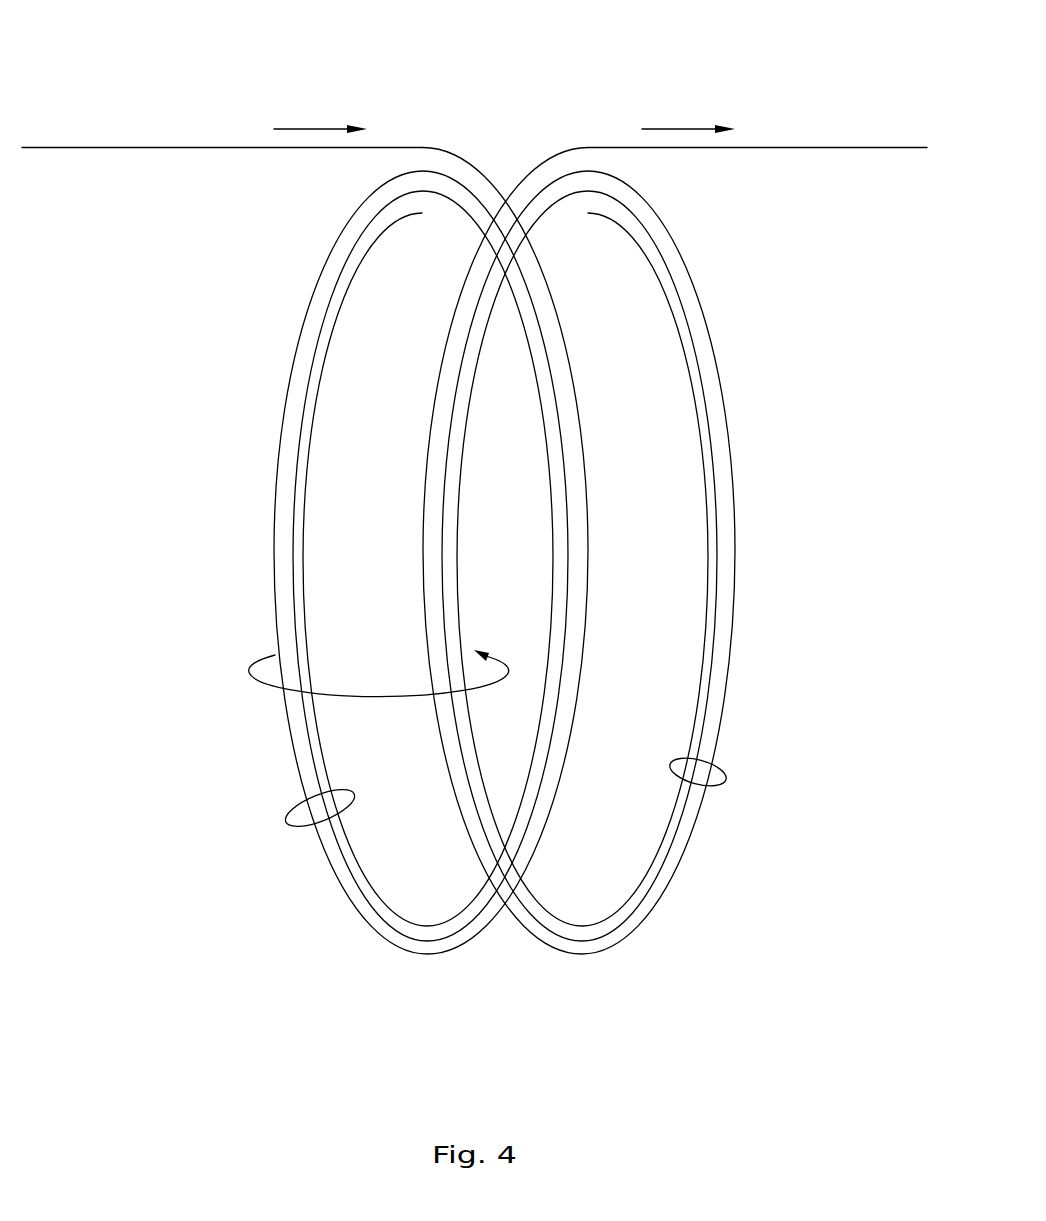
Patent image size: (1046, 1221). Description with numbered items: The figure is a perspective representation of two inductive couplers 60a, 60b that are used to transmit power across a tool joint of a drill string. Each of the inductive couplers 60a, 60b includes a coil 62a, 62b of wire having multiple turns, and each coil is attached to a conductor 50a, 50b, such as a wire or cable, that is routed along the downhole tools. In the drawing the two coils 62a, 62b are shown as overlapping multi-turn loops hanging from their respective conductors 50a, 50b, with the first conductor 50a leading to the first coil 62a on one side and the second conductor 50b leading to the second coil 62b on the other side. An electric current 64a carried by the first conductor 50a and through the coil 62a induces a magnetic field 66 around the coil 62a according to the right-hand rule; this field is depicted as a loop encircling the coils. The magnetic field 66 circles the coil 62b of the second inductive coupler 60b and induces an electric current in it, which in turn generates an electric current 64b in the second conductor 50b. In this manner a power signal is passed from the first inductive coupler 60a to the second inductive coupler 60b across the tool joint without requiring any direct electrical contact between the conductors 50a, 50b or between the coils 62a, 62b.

The first conductor 50a is at (102, 148).
The second conductor 50b is at (852, 148).
The first inductive coupler 60a is at (401, 968).
The second inductive coupler 60b is at (562, 972).
The coil of first inductive coupler 62a is at (303, 827).
The coil of second inductive coupler 62b is at (720, 787).
The electric current in first conductor 64a is at (307, 129).
The electric current in second conductor 64b is at (667, 129).
The magnetic field 66 is at (335, 703).